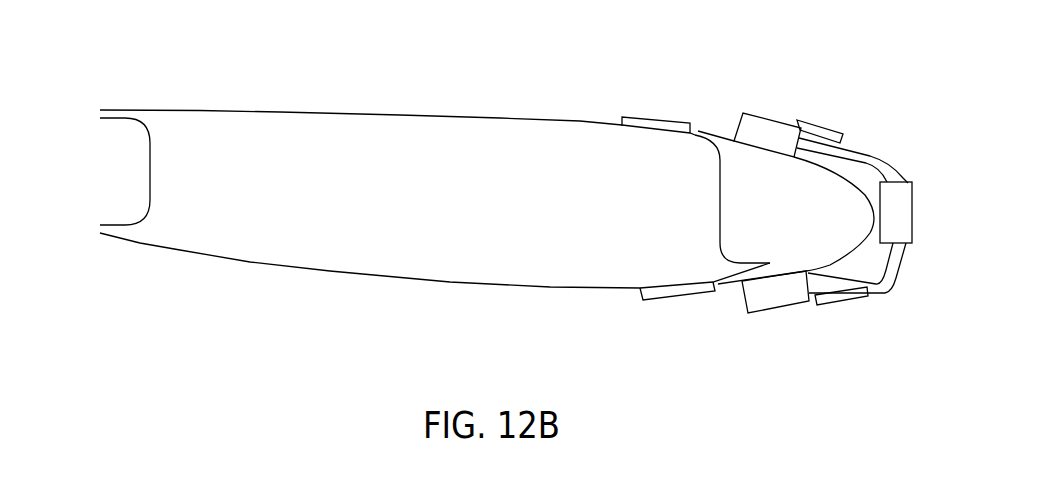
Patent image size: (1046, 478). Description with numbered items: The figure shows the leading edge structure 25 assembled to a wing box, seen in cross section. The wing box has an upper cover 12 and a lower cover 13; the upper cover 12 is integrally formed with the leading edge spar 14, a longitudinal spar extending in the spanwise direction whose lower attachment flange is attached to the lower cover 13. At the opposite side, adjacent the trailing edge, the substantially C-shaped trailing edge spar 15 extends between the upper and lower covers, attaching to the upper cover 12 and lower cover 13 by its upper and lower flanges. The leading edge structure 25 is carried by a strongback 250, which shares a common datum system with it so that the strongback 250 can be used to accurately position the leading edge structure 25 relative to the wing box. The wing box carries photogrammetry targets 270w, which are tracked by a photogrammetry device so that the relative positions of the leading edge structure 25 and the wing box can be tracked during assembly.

The upper cover 12 is at (432, 112).
The lower cover 13 is at (330, 272).
The leading edge spar 14 is at (718, 230).
The trailing edge spar 15 is at (142, 165).
The leading edge structure 25 is at (724, 132).
The strongback 250 is at (843, 288).
The photogrammetry targets 270w is at (633, 116).